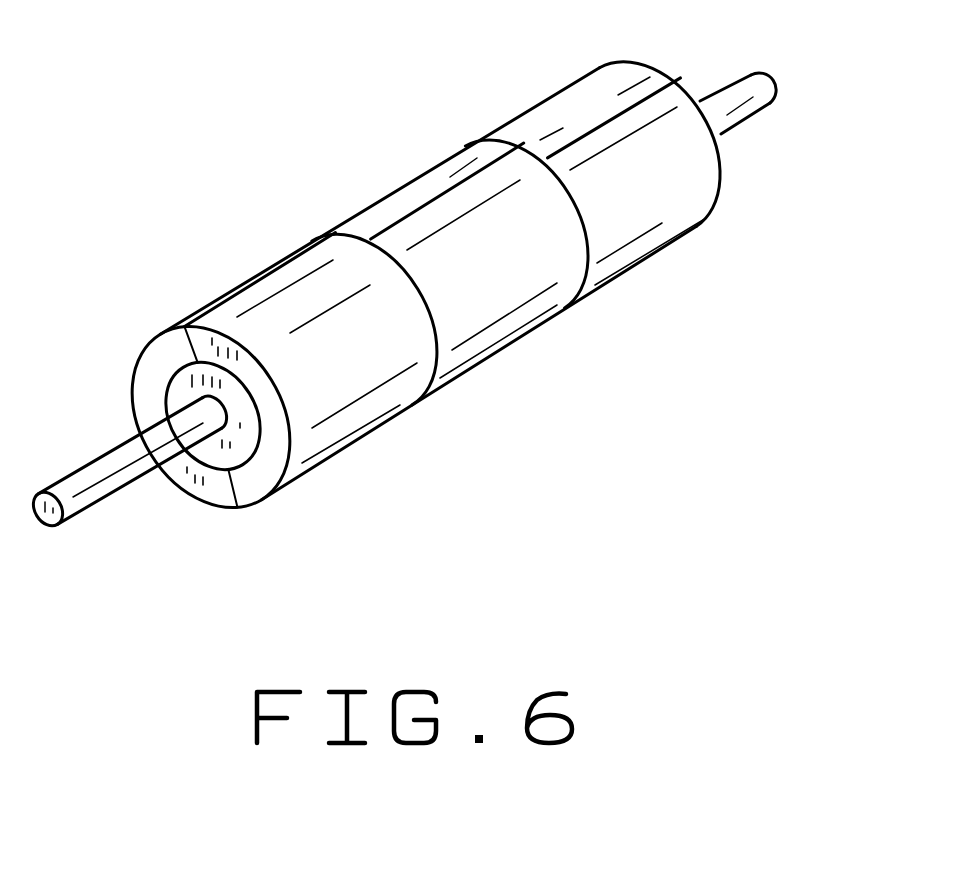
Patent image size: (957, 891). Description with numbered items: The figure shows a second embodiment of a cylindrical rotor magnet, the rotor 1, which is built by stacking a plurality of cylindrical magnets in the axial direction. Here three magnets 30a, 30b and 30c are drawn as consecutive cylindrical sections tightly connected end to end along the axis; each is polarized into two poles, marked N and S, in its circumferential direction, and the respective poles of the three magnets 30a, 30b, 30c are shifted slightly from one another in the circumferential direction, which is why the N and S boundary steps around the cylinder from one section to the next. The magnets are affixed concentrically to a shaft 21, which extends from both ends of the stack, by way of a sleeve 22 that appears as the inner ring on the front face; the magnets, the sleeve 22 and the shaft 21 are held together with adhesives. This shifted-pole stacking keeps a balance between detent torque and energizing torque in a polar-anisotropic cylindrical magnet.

The rotor 1 is at (347, 182).
The shaft 21 is at (727, 100).
The sleeve 22 is at (212, 447).
The magnet 30a is at (338, 432).
The magnet 30b is at (482, 342).
The magnet 30c is at (615, 253).